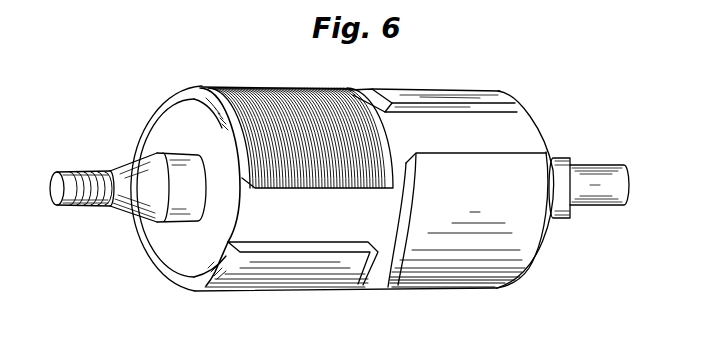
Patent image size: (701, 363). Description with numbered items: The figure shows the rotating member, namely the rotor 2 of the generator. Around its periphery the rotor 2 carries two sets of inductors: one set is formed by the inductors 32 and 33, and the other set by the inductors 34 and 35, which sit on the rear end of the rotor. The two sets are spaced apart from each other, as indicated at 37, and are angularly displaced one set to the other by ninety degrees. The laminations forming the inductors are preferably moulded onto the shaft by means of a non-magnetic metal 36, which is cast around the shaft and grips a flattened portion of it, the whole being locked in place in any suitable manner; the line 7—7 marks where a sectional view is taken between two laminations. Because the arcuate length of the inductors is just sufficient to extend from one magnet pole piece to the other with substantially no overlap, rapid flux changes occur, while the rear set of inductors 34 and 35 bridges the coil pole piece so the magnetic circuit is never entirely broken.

The rotor 2 is at (374, 189).
The section line 7— 7 is at (295, 193).
The inductor 32 is at (176, 96).
The inductor 33 is at (211, 283).
The inductor 34 is at (514, 104).
The inductor 35 is at (522, 227).
The non-magnetic metal 36 is at (518, 138).
The spacing between inductor sets 37 is at (368, 106).